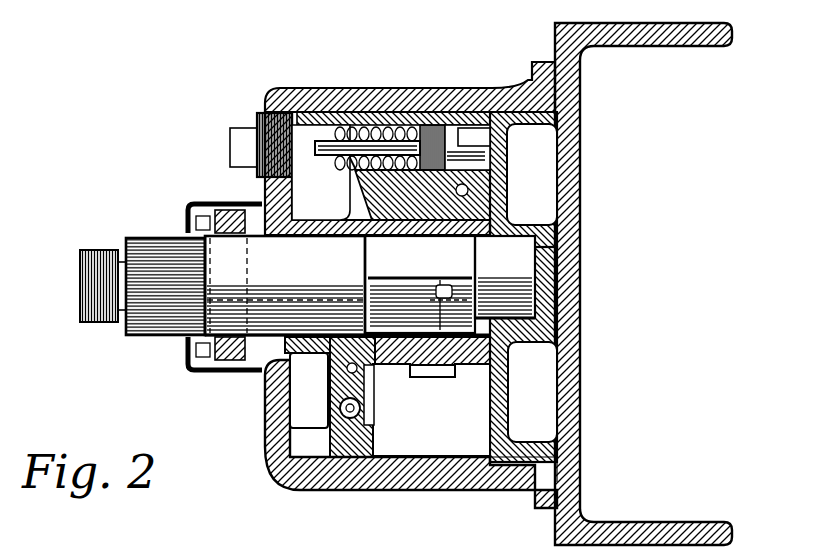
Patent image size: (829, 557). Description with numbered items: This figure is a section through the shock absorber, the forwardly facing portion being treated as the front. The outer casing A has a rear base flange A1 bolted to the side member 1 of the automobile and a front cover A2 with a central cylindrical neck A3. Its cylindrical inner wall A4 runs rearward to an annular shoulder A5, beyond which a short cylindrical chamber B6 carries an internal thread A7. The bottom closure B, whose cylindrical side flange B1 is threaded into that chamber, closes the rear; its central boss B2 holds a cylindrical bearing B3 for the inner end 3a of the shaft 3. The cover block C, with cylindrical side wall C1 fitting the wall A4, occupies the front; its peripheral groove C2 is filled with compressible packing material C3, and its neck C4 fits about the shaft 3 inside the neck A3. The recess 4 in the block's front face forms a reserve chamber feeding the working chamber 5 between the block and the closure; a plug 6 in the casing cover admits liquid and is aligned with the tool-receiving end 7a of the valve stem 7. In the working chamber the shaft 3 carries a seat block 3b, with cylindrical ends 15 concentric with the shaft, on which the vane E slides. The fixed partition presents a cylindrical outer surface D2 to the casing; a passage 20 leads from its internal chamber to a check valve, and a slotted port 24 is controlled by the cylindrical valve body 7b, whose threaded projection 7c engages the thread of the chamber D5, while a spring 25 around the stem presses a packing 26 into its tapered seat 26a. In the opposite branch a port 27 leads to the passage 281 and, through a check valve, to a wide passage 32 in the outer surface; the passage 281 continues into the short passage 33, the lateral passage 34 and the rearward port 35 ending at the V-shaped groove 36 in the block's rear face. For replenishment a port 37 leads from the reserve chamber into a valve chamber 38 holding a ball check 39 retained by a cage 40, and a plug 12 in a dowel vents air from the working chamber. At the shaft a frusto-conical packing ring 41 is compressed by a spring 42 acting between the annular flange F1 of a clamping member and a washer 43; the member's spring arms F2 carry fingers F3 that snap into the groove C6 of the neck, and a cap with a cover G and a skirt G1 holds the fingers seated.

The bottom closure B is at (562, 158).
The cylindrical bearing B3 is at (563, 228).
The central boss B2 is at (563, 270).
The side member 1 is at (562, 333).
The cylindrical ends 15 is at (562, 352).
The cylindrical side flange B1 is at (562, 438).
The internal thread A7 is at (562, 479).
The outer casing A is at (374, 135).
The slotted port 24 is at (508, 192).
The passage 20 is at (508, 211).
The vane E is at (556, 226).
The working chamber 5 is at (431, 410).
The laterally extending passage 34 is at (326, 374).
The rear or inner end of the shaft 3a is at (505, 277).
The plug 6 is at (272, 114).
The reserve chamber 4 is at (487, 540).
The packing 26 is at (340, 160).
The neck of the cover block C4 is at (322, 230).
The cover block C is at (357, 200).
The tapered seat 26a is at (358, 132).
The valve stem 7 is at (391, 140).
The cylindrical outer surface of the partition D2 is at (420, 126).
The threaded chamber D5 is at (402, 124).
The threaded projection 7c is at (447, 126).
The cylindrical valve body 7b is at (463, 134).
The tool-receiving end of the valve stem 7a is at (325, 136).
The cylindrical side wall of the cover block C1 is at (336, 122).
The rear base flange A1 is at (541, 62).
The annular flange of the clamping member F1 is at (190, 348).
The shaft 3 is at (285, 285).
The seat block 3b is at (378, 253).
The short forwardly extending passage 33 is at (352, 330).
The spring 25 is at (396, 226).
The passage 281 is at (390, 266).
The port 27 is at (445, 286).
The skirt of the cap G1 is at (212, 206).
The washer 43 is at (229, 235).
The groove C6 is at (246, 226).
The frusto-conical packing ring 41 is at (192, 212).
The spring 42 is at (188, 222).
The cover of the cap G is at (190, 360).
The spring arms F2 is at (206, 370).
The fingers F3 is at (240, 368).
The central cylindrical neck A3 is at (240, 377).
The front cover A2 is at (258, 444).
The angular peripheral groove C2 is at (272, 450).
The compressible packing material C3 is at (284, 482).
The valve chamber 38 is at (362, 483).
The cylindrical inner wall A4 is at (393, 483).
The annular shoulder A5 is at (468, 482).
The boss B6 is at (518, 500).
The port 37 is at (340, 410).
The V-shaped groove 36 is at (380, 378).
The rearwardly extending port 35 is at (376, 402).
The ball check 39 is at (376, 420).
The cage 40 is at (432, 398).
The wide passage 32 is at (445, 378).
The plug 12 is at (247, 280).